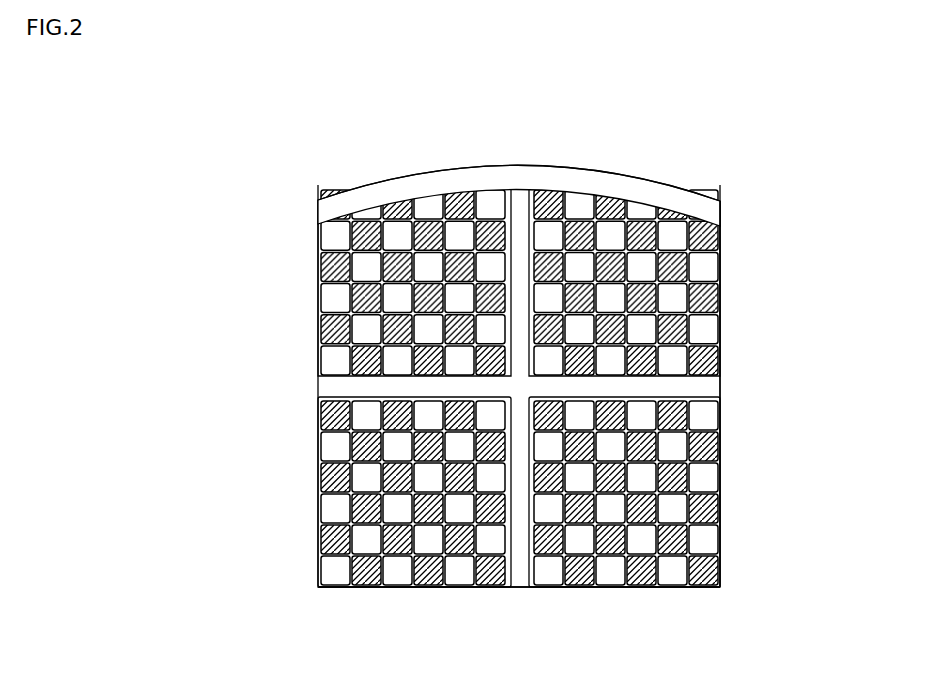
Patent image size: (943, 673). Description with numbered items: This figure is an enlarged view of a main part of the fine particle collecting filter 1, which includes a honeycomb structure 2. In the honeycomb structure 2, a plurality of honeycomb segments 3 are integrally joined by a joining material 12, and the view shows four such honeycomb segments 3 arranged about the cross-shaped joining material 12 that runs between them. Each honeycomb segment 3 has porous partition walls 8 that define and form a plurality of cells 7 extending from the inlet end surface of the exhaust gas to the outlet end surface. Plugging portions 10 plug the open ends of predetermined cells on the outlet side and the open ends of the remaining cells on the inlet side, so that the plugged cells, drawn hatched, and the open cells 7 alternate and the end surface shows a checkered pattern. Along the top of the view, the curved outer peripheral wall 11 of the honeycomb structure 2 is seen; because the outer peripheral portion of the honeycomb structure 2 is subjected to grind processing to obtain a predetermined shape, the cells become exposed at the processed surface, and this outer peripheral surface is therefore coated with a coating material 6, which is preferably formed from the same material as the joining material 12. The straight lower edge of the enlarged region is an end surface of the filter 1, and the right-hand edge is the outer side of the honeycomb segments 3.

The fine particle collecting filter 1 is at (742, 99).
The honeycomb structure 2 is at (642, 172).
The honeycomb segment 3 is at (721, 270).
The coating material 6 is at (528, 177).
The cell 7 is at (330, 443).
The partition wall 8 is at (348, 508).
The plugging portion 10 is at (330, 545).
The outer peripheral wall 11 is at (465, 587).
The joining material 12 is at (708, 392).